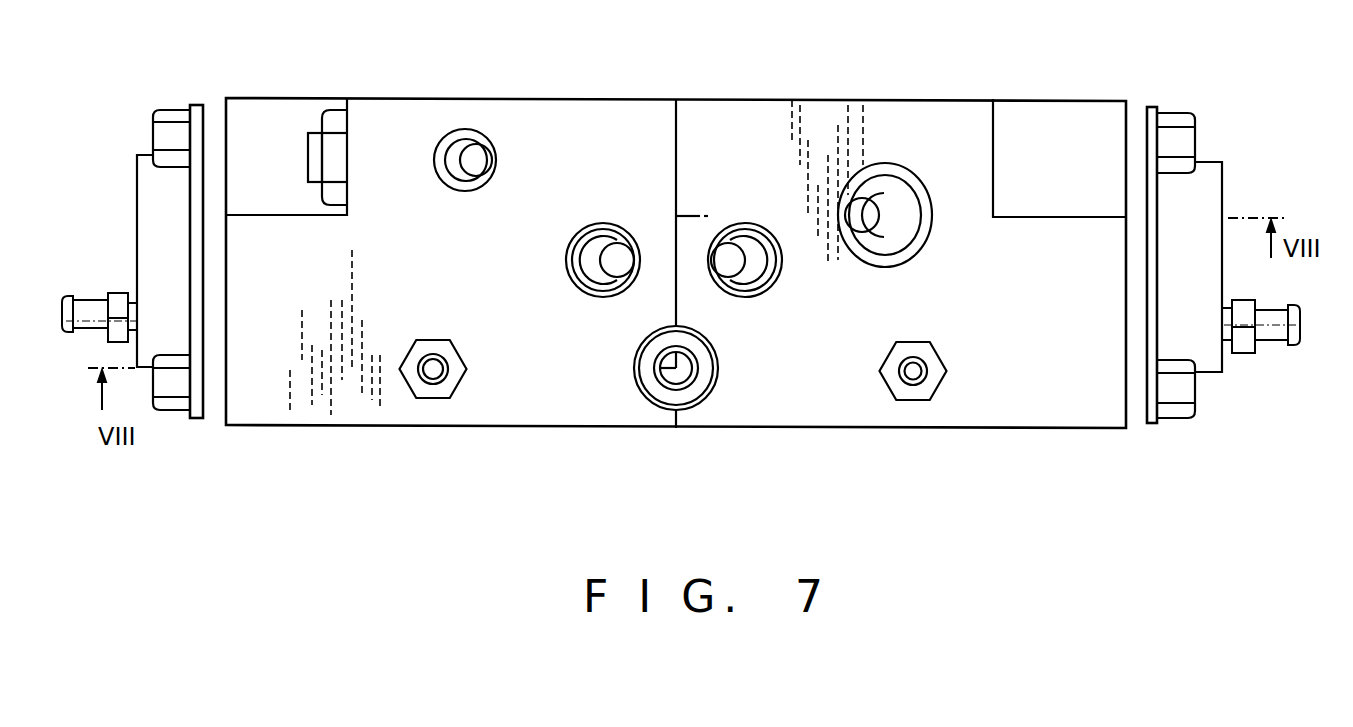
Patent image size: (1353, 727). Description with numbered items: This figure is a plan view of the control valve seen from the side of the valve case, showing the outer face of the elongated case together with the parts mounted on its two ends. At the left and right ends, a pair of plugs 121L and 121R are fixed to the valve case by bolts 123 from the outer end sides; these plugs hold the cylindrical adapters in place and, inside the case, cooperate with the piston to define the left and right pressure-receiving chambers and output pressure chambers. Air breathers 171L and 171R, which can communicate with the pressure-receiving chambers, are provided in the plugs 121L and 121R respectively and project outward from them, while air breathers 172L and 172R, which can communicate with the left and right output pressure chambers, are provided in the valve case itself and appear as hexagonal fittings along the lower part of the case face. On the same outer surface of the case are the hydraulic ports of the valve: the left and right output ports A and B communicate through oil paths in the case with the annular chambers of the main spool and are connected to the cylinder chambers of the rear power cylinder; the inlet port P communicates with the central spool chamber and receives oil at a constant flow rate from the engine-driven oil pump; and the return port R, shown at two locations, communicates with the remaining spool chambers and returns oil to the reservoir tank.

The bolts 123 is at (178, 114).
The left plug 121L is at (145, 232).
The right plug 121R is at (1203, 190).
The left air breather 171L is at (92, 308).
The right air breather 171R is at (1270, 343).
The left air breather 172L is at (434, 398).
The right air breather 172R is at (911, 400).
The return port R is at (470, 138).
The left output port A is at (617, 243).
The right output port B is at (740, 250).
The inlet port P is at (688, 370).